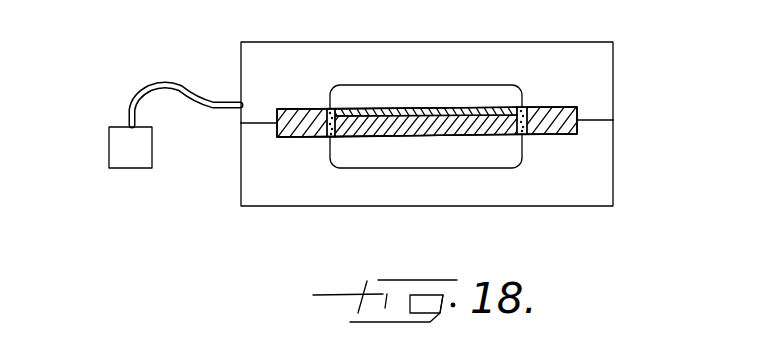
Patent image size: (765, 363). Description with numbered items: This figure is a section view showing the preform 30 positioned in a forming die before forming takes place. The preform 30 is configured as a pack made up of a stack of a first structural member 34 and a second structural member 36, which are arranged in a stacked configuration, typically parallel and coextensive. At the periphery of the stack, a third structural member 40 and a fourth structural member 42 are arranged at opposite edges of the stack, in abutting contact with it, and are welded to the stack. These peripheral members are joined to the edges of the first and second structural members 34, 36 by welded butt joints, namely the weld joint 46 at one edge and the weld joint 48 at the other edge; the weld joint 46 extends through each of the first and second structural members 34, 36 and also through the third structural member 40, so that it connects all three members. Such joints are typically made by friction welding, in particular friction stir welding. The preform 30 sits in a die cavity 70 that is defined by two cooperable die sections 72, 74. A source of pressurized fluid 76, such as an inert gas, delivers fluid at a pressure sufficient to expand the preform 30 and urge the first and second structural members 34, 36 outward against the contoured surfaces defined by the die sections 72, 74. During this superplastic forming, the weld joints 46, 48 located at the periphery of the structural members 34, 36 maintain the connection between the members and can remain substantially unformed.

The preform 30 is at (427, 126).
The first structural member 34 is at (417, 107).
The second structural member 36 is at (442, 137).
The third structural member 40 is at (293, 137).
The fourth structural member 42 is at (557, 135).
The weld joint 46 is at (331, 118).
The weld joint 48 is at (523, 108).
The die cavity 70 is at (480, 165).
The die section 72 is at (605, 75).
The die section 74 is at (605, 150).
The source of pressurized fluid 76 is at (120, 140).